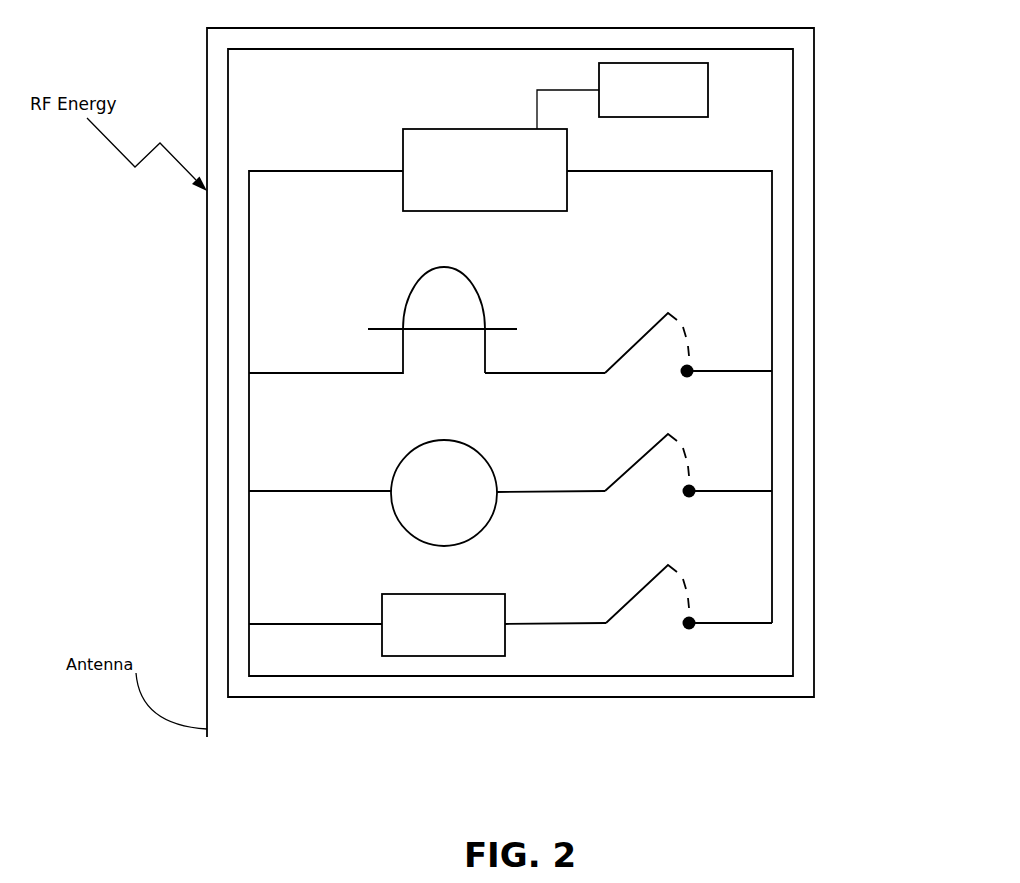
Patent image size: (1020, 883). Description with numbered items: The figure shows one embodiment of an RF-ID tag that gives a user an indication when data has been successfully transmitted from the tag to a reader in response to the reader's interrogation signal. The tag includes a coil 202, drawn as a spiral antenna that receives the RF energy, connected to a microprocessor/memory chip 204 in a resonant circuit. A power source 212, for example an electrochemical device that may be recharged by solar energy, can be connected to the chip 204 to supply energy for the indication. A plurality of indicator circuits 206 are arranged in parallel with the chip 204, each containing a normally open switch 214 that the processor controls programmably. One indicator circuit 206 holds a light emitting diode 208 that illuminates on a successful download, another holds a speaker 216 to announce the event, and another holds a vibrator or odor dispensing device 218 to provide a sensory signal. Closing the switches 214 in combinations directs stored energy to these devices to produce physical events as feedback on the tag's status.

The coil 202 is at (815, 210).
The microprocessor/memory chip 204 is at (485, 170).
The indicator circuit 206 is at (545, 490).
The light emitting diode 208 is at (383, 320).
The power source 212 is at (622, 96).
The switch 214 is at (688, 335).
The speaker 216 is at (373, 493).
The vibrator or odor dispensing device 218 is at (377, 625).